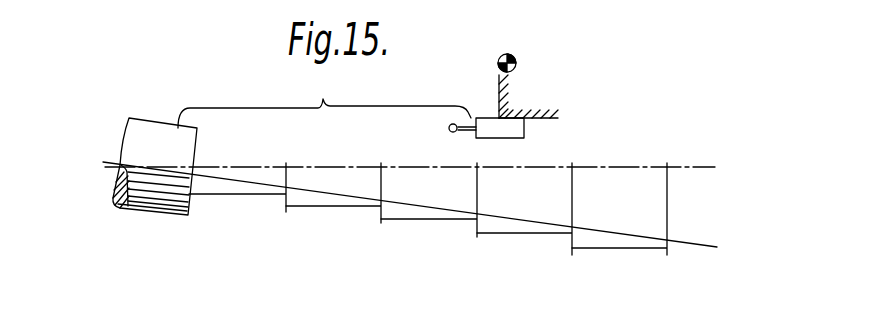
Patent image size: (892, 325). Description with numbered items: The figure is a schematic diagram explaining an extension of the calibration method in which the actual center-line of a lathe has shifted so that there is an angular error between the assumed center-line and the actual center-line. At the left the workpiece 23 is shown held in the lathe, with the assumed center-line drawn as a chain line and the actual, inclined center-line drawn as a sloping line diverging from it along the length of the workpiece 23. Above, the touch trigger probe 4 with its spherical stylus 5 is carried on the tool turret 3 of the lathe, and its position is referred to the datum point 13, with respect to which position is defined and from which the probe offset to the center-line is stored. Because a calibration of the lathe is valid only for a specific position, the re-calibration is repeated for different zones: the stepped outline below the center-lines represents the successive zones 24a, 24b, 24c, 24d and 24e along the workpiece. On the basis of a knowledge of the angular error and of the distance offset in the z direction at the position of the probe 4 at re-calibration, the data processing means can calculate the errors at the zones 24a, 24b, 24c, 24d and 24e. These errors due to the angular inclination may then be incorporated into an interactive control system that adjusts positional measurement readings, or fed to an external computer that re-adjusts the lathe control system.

The workpiece 23 is at (173, 133).
The datum point 13 is at (515, 53).
The tool turret 3 is at (497, 95).
The touch trigger probe 4 is at (514, 138).
The spherical stylus 5 is at (449, 128).
The zone 24a is at (242, 195).
The zone 24b is at (338, 207).
The zone 24c is at (432, 220).
The zone 24d is at (521, 234).
The fifth step segment 24e is at (616, 248).